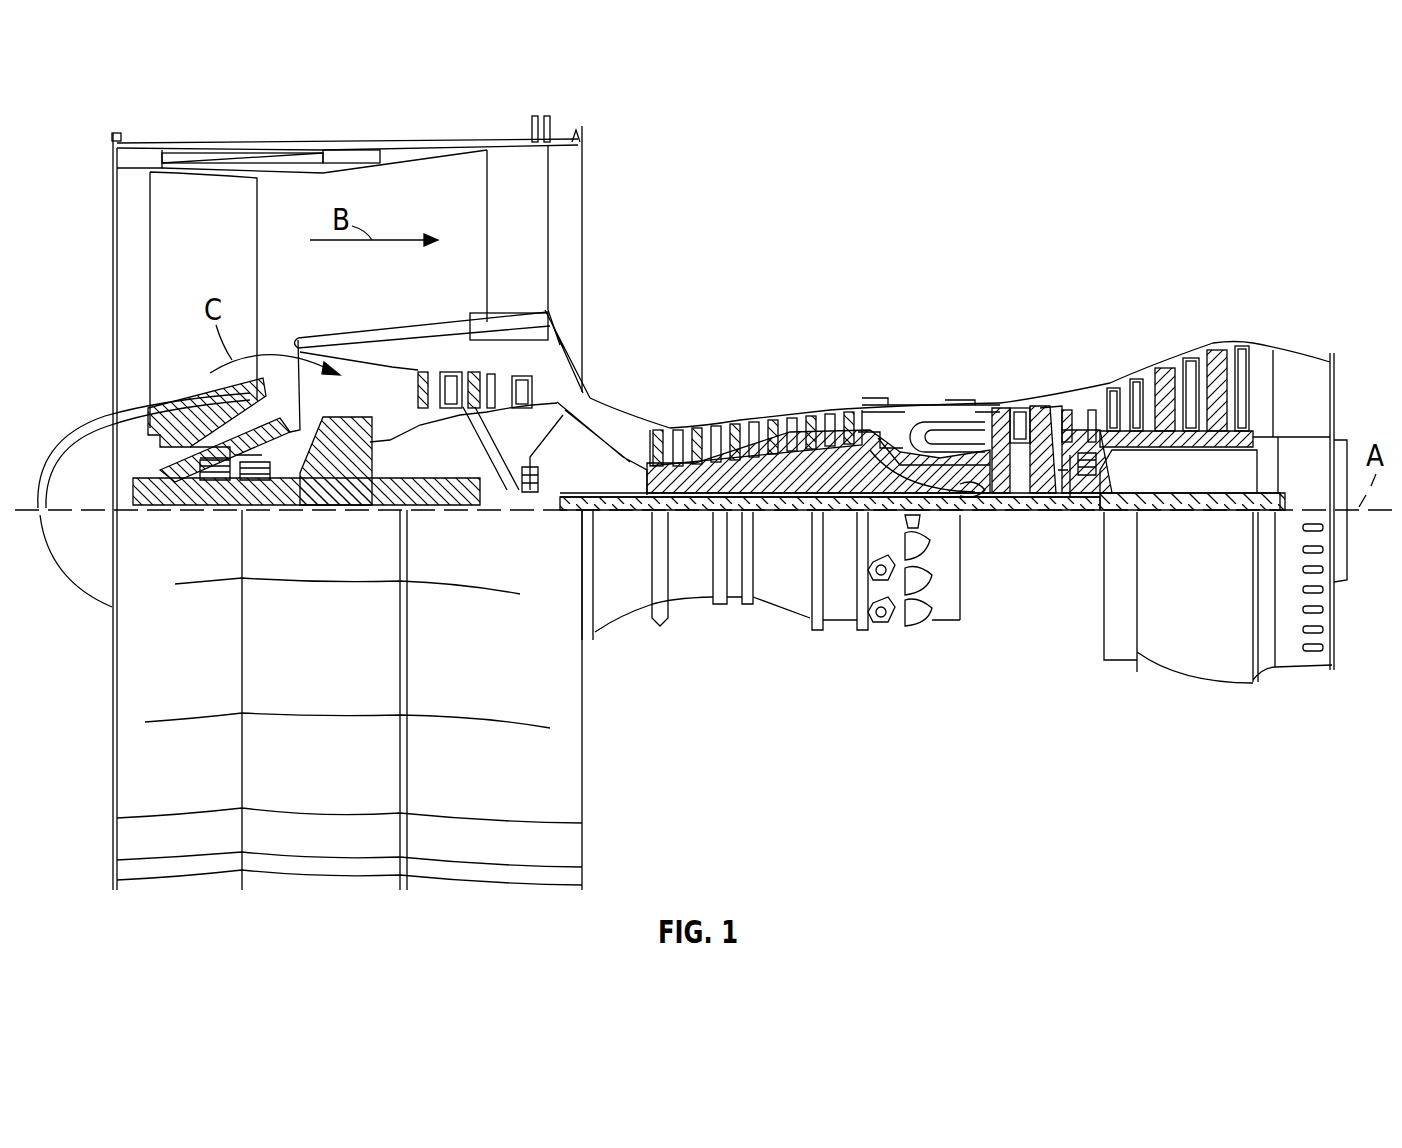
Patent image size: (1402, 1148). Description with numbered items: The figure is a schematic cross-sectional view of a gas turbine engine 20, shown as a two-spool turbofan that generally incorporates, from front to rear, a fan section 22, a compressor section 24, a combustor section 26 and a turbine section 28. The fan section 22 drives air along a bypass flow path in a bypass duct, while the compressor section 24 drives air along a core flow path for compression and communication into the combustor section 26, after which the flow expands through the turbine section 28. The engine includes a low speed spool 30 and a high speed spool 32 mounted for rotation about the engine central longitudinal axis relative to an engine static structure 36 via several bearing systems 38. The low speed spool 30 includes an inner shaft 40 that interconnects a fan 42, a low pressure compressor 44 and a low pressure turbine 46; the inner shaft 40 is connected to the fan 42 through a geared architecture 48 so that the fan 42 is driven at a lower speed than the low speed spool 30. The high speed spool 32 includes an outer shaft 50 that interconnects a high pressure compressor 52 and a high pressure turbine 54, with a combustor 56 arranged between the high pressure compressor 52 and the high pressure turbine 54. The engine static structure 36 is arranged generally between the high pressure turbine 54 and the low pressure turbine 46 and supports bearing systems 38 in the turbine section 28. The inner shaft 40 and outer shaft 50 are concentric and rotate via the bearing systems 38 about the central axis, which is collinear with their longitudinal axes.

The gas turbine engine 20 is at (1214, 112).
The fan section 22 is at (228, 136).
The compressor section 24 is at (766, 340).
The combustor section 26 is at (926, 360).
The turbine section 28 is at (1078, 340).
The low speed spool 30 is at (802, 510).
The high speed spool 32 is at (860, 450).
The engine static structure 36 is at (842, 626).
The bearing systems 38 is at (212, 473).
The inner shaft 40 is at (604, 516).
The fan 42 is at (212, 263).
The low pressure compressor 44 is at (490, 375).
The low pressure turbine 46 is at (1180, 372).
The geared architecture 48 is at (348, 485).
The outer shaft 50 is at (983, 484).
The high pressure compressor 52 is at (735, 437).
The high pressure turbine 54 is at (1020, 408).
The combustor 56 is at (938, 435).